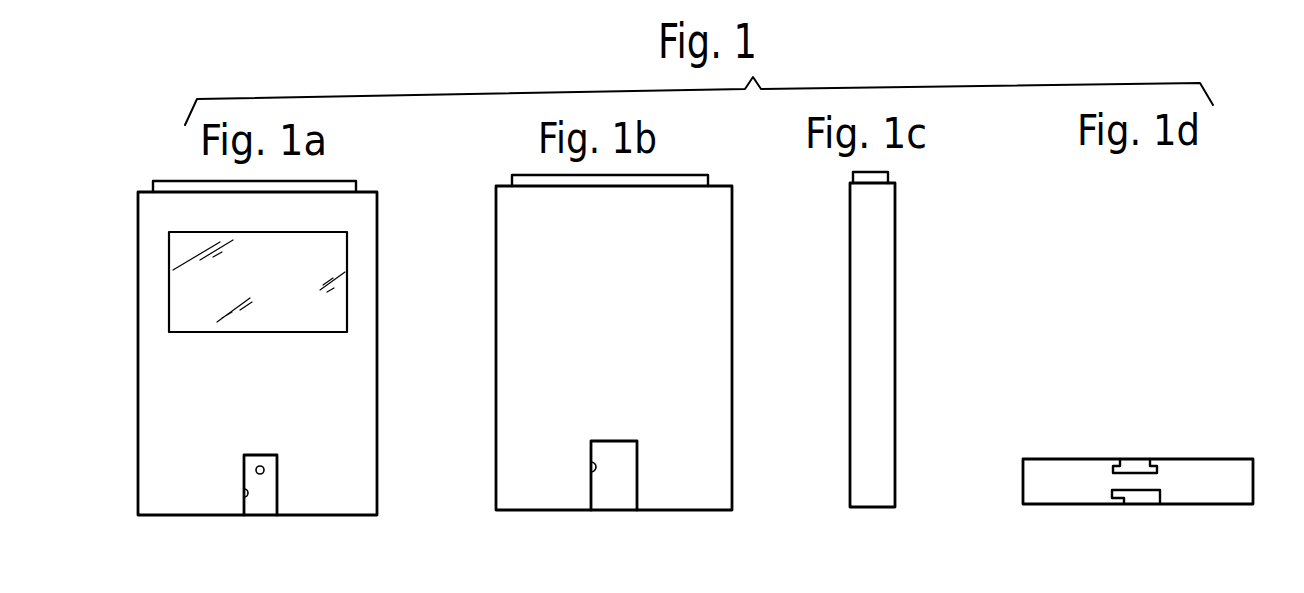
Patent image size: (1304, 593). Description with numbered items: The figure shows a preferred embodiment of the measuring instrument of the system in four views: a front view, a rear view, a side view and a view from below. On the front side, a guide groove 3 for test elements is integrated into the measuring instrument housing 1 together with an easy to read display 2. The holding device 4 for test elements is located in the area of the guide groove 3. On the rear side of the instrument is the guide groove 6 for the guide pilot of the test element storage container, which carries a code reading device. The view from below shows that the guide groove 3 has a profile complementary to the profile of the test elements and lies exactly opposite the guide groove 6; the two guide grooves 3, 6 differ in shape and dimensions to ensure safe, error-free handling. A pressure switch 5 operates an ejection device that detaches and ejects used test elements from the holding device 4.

In FIG. 1A, the measuring instrument housing 1 is at (148, 308).
In FIG. 1B, the measuring instrument housing 1 is at (510, 278).
In FIG. 1C, the measuring instrument housing 1 is at (852, 323).
In FIG. 1D, the measuring instrument housing 1 is at (1200, 468).
In FIG. 1A, the display 2 is at (180, 247).
In FIG. 1A, the guide groove for test element 3 is at (247, 497).
In FIG. 1D, the guide groove for test element 3 is at (1128, 466).
In FIG. 1A, the holding device 4 is at (255, 472).
In FIG. 1A, the pressure switch for the ejection device 5 is at (163, 181).
In FIG. 1B, the pressure switch for the ejection device 5 is at (523, 172).
In FIG. 1C, the pressure switch for the ejection device 5 is at (858, 175).
In FIG. 1B, the guide groove for the guide pilot with a code reading device 6 is at (600, 475).
In FIG. 1D, the guide groove for the guide pilot with a code reading device 6 is at (1122, 501).